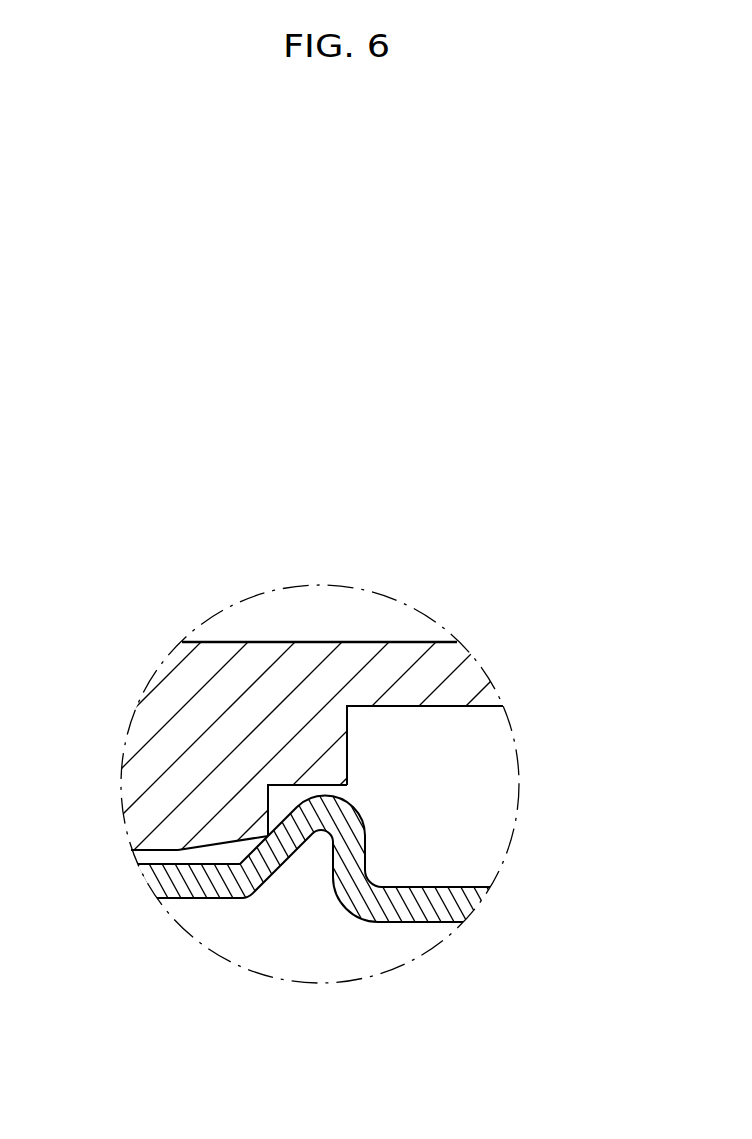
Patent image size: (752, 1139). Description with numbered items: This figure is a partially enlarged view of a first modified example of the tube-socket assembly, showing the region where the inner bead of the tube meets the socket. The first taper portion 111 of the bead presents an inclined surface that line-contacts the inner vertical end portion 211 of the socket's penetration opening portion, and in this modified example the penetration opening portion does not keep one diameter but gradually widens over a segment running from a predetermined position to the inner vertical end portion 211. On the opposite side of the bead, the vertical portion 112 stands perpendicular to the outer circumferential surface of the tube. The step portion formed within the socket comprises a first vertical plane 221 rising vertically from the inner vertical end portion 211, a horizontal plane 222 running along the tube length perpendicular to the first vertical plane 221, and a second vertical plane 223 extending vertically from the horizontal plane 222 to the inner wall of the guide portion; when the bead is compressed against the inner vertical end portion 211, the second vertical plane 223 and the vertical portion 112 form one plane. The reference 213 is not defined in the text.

The first taper portion 111 is at (268, 794).
The vertical portion 112 is at (368, 852).
The inner vertical end portion 211 is at (343, 794).
The inclined portion 213 is at (222, 848).
The first vertical plane 221 is at (268, 811).
The horizontal plane 222 is at (300, 784).
The second vertical plane 223 is at (347, 746).